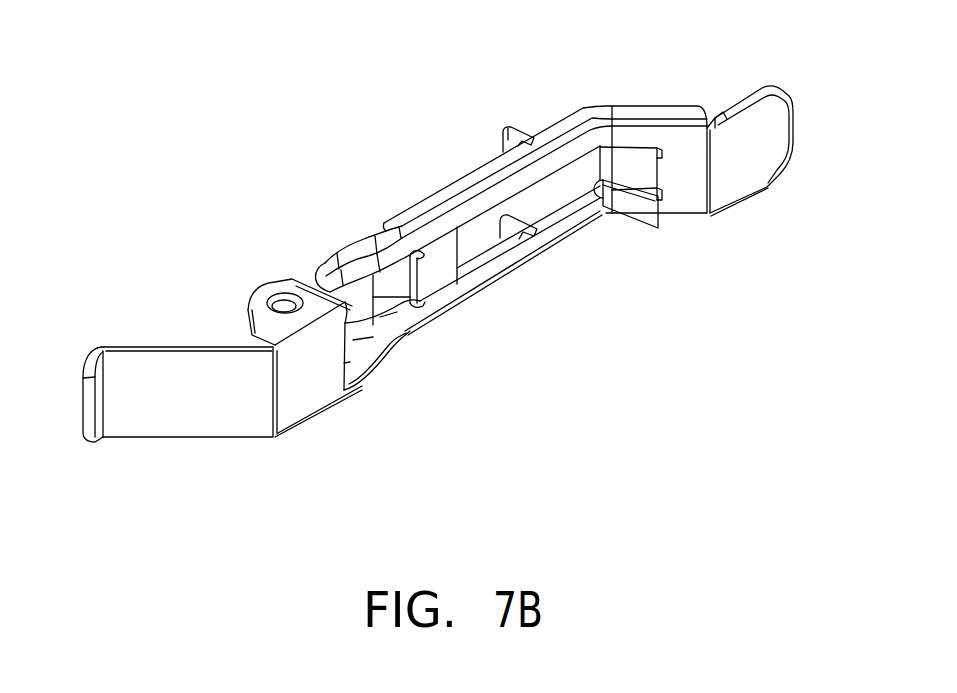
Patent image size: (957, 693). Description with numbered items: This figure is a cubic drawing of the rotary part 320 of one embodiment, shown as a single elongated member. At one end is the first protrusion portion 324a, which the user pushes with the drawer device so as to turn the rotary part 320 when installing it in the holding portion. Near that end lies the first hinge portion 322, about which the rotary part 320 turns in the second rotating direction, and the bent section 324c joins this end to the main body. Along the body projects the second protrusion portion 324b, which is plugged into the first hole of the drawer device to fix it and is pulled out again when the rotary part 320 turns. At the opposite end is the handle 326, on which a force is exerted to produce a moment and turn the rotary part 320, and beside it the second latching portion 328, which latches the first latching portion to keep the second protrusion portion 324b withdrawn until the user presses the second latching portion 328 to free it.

The rotary part 320 is at (760, 504).
The first hinge portion 322 is at (286, 306).
The first protrusion portion 324a is at (172, 408).
The second protrusion portion 324b is at (508, 130).
The S-shaped bend portion 324c is at (323, 272).
The handle 326 is at (781, 185).
The second latching portion 328 is at (605, 226).